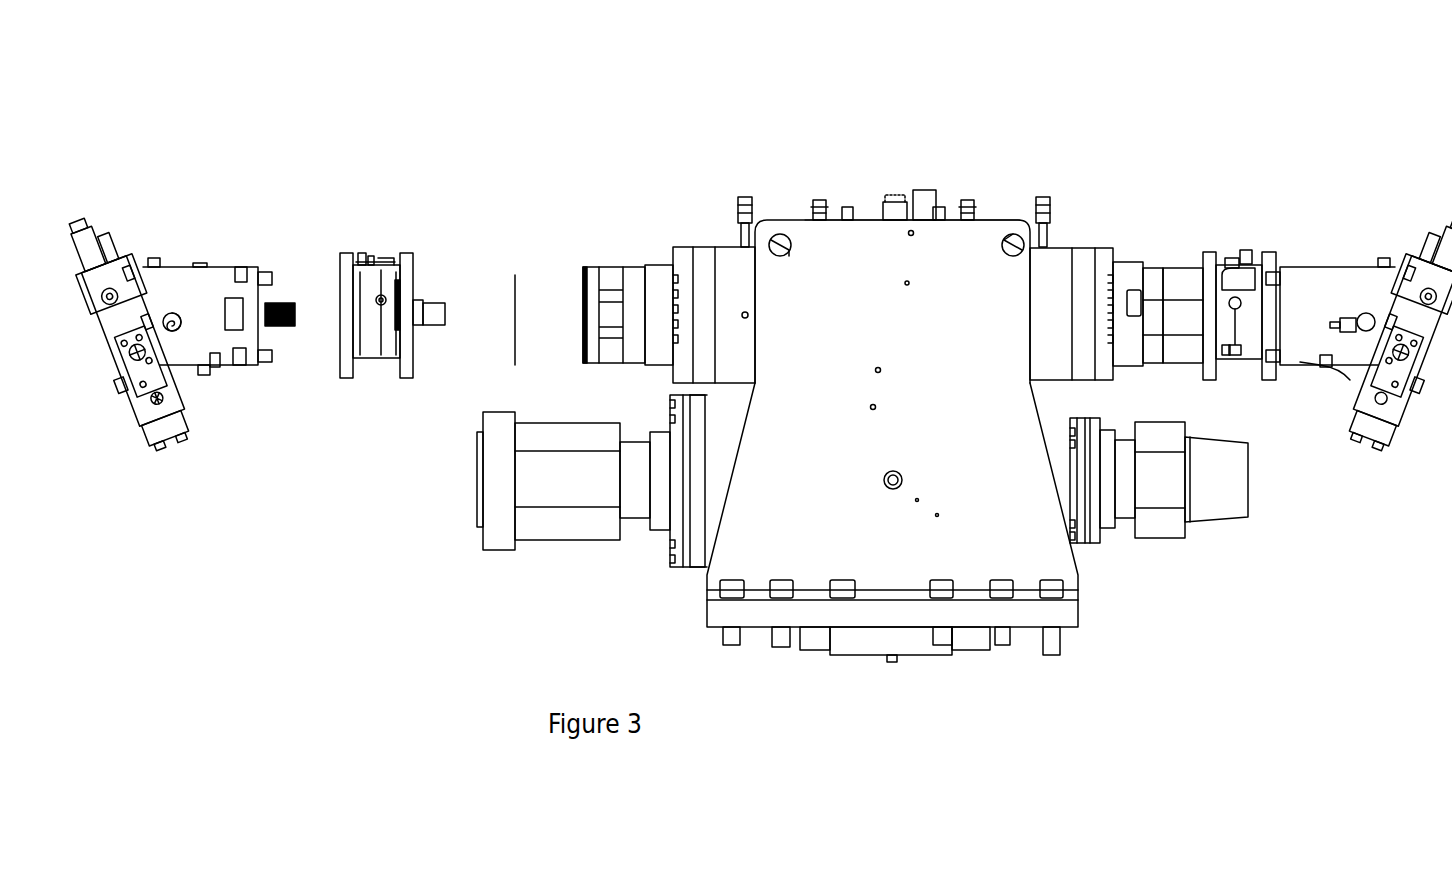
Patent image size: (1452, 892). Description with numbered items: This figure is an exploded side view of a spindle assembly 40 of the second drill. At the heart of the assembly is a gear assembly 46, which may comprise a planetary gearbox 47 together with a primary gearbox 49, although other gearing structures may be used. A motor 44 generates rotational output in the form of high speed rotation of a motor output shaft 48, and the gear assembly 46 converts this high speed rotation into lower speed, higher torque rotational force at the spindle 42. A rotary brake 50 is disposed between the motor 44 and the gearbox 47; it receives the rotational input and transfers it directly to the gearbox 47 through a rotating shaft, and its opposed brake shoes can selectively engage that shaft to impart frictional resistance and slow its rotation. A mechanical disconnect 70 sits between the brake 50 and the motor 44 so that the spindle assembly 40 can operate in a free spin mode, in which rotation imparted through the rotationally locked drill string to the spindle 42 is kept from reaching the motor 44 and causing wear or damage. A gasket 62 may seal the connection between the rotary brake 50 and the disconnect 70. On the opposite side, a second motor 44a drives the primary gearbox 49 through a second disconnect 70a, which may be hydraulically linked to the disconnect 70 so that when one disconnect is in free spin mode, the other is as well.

The spindle assembly 40 is at (423, 166).
The spindle 42 is at (1248, 510).
The motor 44 is at (218, 265).
The second motor 44a is at (1378, 243).
The gear assembly 46 is at (1145, 176).
The planetary gearbox 47 is at (691, 247).
The motor output shaft 48 is at (286, 300).
The primary gearbox 49 is at (893, 190).
The rotary brake 50 is at (597, 265).
The gasket 62 is at (512, 270).
The mechanical disconnect 70 is at (340, 253).
The second disconnect 70a is at (1255, 245).